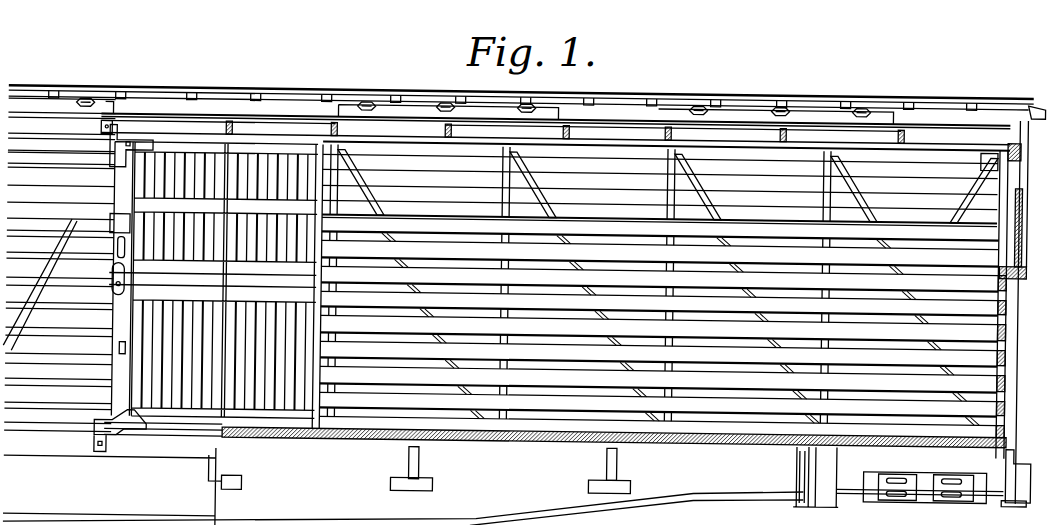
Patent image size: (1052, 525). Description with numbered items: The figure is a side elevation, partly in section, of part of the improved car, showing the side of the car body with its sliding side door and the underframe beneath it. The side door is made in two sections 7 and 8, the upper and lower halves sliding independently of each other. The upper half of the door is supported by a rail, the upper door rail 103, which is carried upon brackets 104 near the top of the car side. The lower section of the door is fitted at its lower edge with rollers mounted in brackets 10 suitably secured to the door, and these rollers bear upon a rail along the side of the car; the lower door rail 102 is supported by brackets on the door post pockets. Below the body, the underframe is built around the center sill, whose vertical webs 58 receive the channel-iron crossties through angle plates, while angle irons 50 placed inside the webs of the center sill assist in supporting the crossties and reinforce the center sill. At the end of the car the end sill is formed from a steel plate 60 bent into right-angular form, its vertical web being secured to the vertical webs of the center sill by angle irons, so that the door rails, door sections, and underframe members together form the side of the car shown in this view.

The upper door section 7 is at (121, 279).
The lower door section 8 is at (212, 310).
The brackets 10 is at (110, 131).
The angle irons 50 is at (440, 482).
The webs 58 is at (165, 485).
The steel plate 60 is at (1027, 436).
The lower door rail 102 is at (163, 434).
The upper door rail 103 is at (160, 126).
The brackets 104 is at (107, 117).